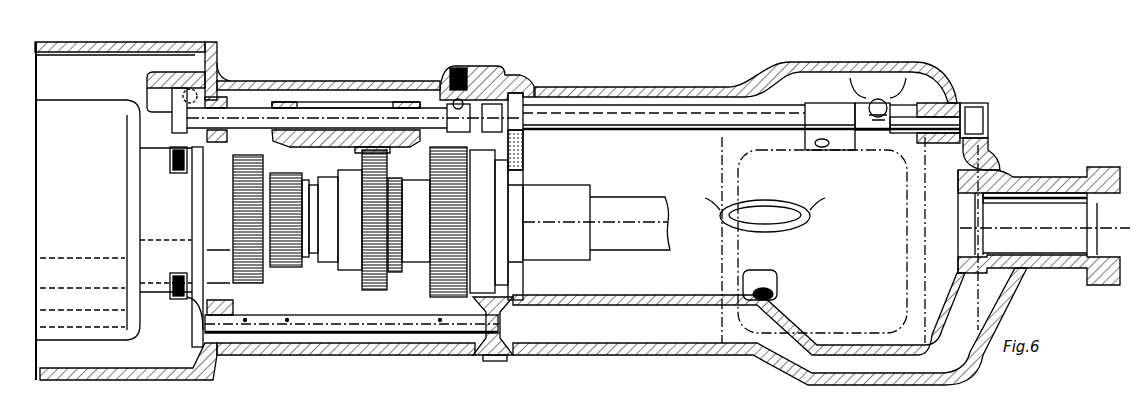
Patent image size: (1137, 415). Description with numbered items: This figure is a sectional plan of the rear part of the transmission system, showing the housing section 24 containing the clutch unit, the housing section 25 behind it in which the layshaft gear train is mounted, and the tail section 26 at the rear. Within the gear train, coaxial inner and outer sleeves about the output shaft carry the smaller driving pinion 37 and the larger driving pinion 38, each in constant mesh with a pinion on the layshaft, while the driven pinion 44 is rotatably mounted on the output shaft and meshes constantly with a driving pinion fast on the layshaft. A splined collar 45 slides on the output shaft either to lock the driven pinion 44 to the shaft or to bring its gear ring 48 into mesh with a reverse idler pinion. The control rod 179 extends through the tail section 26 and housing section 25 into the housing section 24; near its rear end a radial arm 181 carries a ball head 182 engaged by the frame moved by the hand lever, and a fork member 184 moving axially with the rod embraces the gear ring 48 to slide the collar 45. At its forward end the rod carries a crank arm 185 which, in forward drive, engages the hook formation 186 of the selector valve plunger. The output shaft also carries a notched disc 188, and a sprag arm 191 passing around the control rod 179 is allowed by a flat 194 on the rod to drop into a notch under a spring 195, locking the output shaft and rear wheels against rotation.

The housing section 24 is at (149, 42).
The housing section 25 is at (334, 82).
The tail section 26 is at (822, 62).
The smaller driving pinion 37 is at (296, 268).
The larger driving pinion 38 is at (255, 283).
The driven pinion 44 is at (453, 297).
The splined collar 45 is at (395, 272).
The gear ring 48 is at (378, 290).
The control rod 179 is at (701, 110).
The radial arm 181 is at (880, 135).
The ball head 182 is at (879, 97).
The fork member 184 is at (376, 140).
The crank arm 185 is at (148, 86).
The hook formation 186 is at (217, 68).
The disc 188 is at (523, 196).
The sprag arm 191 is at (522, 98).
The flat 194 is at (560, 130).
The spring 195 is at (523, 150).